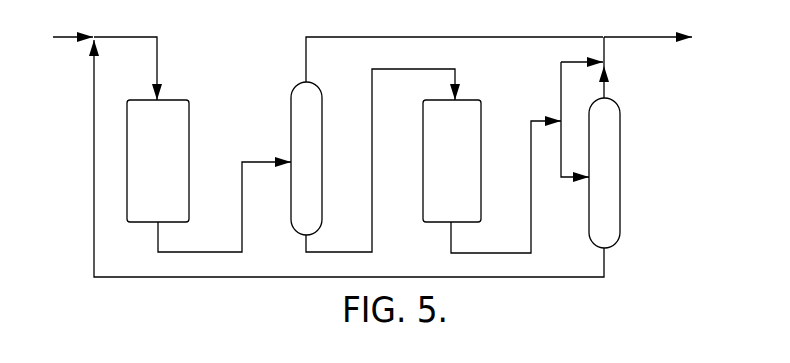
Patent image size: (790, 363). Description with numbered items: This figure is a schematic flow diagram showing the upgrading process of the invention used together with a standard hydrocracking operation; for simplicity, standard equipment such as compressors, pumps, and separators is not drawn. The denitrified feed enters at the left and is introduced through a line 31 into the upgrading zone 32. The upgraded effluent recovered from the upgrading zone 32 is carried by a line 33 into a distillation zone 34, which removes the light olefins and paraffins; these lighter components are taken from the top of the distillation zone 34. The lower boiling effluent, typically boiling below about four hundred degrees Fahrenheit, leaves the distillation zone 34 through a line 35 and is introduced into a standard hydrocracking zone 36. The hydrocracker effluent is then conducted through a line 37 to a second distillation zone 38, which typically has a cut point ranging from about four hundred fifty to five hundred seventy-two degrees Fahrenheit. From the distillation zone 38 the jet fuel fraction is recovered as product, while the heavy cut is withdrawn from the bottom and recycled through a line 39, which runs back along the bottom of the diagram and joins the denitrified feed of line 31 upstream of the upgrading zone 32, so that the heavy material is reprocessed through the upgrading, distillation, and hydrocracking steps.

The line 31 is at (68, 37).
The upgrading zone 32 is at (189, 120).
The line 33 is at (242, 212).
The distillation zone 34 is at (322, 110).
The line 35 is at (372, 212).
The hydrocracking zone 36 is at (481, 113).
The line 37 is at (531, 214).
The distillation zone 38 is at (620, 110).
The line 39 is at (388, 277).